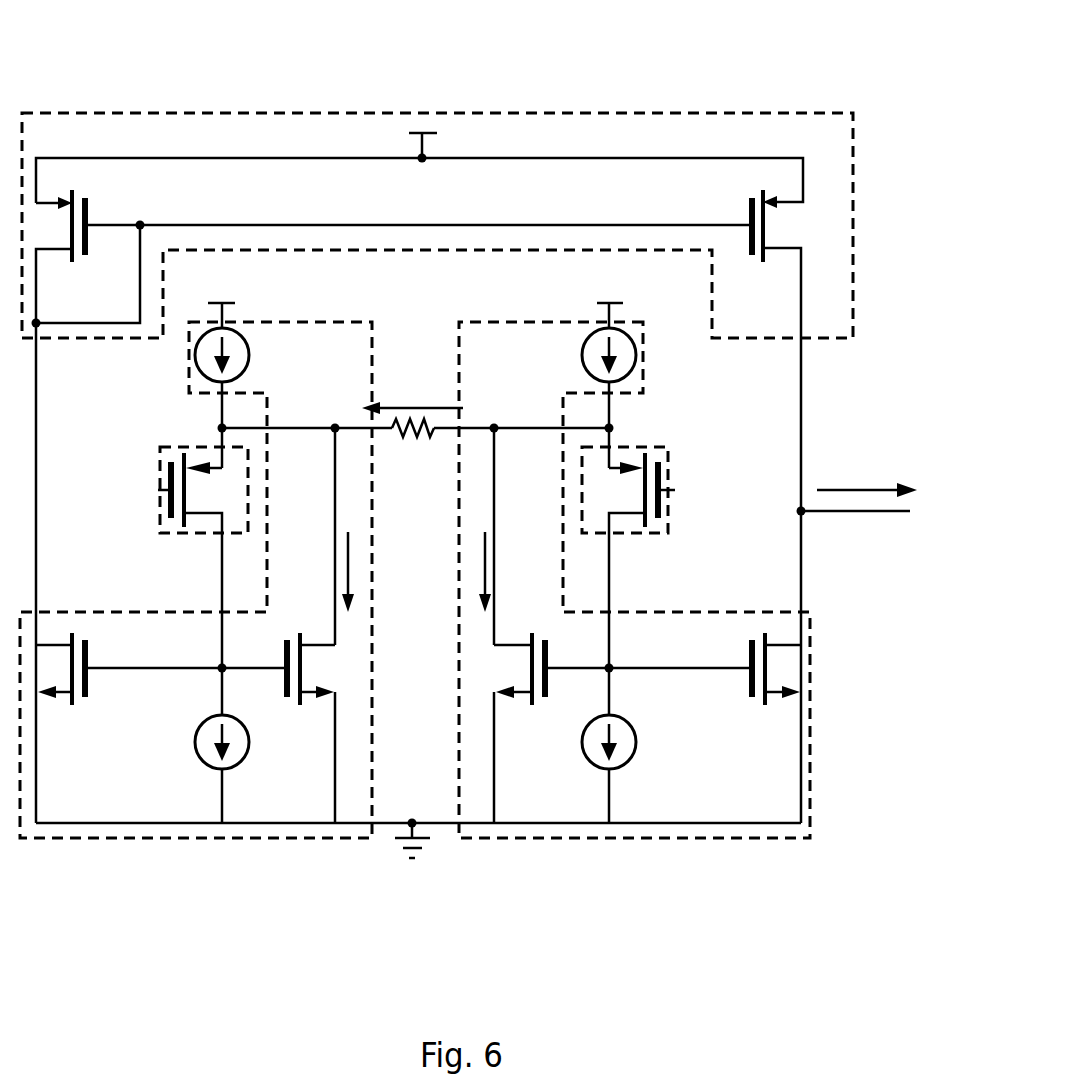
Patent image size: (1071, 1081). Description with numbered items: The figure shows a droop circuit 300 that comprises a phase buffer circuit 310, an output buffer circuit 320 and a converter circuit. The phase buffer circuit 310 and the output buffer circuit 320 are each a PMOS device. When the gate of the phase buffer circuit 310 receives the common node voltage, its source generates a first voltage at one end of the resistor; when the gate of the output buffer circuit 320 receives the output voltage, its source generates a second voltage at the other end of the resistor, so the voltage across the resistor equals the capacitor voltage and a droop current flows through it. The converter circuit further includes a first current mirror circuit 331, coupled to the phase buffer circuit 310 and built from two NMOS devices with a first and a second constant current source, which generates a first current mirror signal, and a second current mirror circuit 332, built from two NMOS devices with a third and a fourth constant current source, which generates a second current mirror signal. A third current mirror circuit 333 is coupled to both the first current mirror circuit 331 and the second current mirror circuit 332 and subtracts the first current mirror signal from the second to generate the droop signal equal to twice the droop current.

The droop circuit 300 is at (860, 66).
The phase buffer circuit 310 is at (642, 447).
The output buffer circuit 320 is at (197, 445).
The first current mirror circuit 331 is at (509, 353).
The second current mirror circuit 332 is at (355, 353).
The third current mirror circuit 333 is at (837, 142).